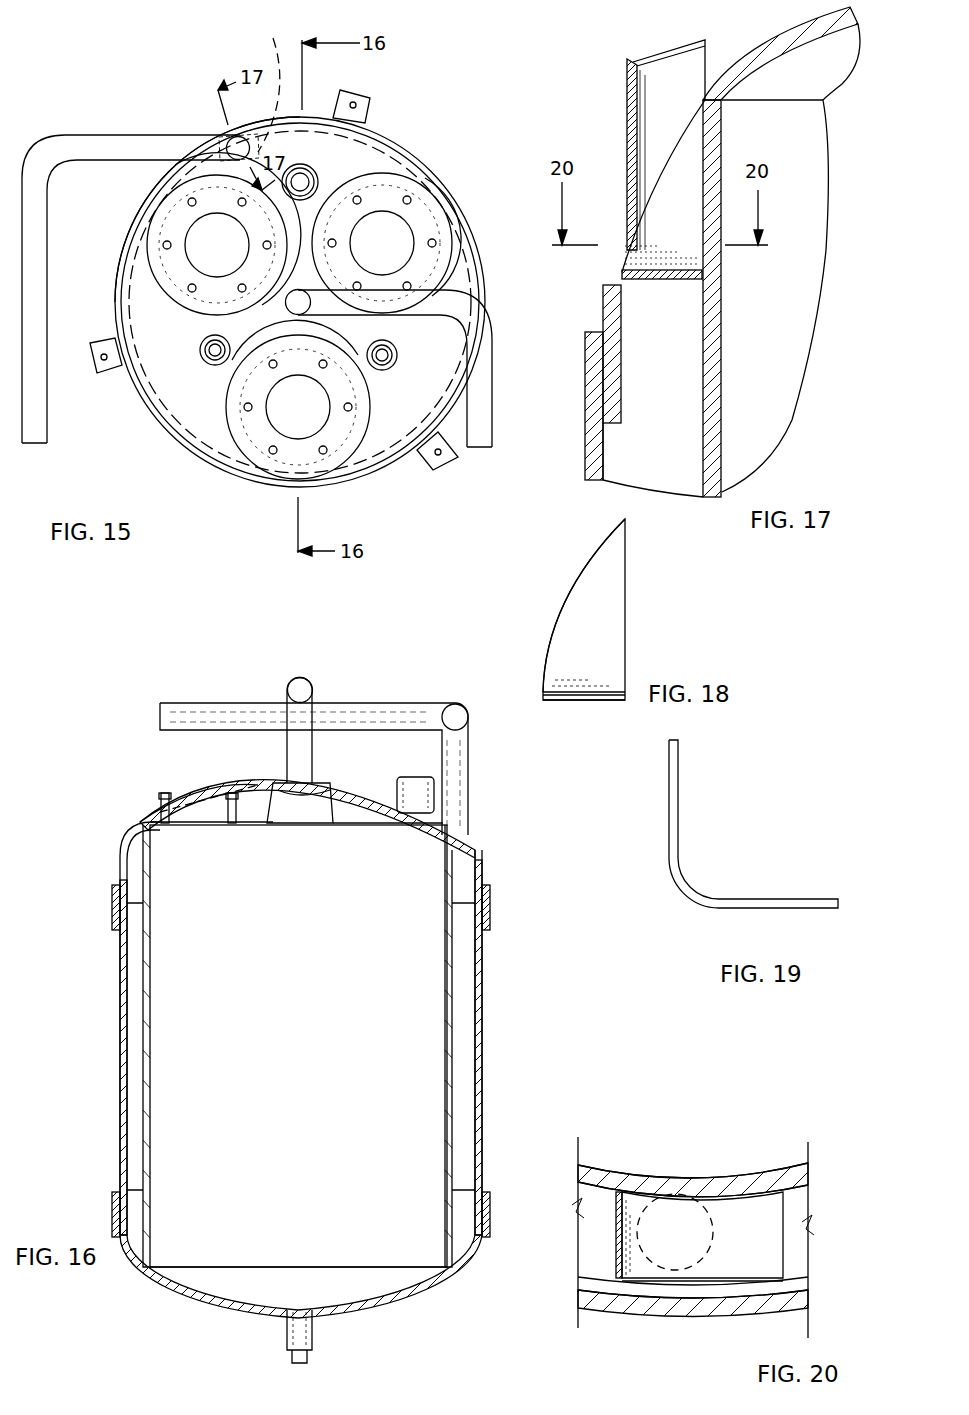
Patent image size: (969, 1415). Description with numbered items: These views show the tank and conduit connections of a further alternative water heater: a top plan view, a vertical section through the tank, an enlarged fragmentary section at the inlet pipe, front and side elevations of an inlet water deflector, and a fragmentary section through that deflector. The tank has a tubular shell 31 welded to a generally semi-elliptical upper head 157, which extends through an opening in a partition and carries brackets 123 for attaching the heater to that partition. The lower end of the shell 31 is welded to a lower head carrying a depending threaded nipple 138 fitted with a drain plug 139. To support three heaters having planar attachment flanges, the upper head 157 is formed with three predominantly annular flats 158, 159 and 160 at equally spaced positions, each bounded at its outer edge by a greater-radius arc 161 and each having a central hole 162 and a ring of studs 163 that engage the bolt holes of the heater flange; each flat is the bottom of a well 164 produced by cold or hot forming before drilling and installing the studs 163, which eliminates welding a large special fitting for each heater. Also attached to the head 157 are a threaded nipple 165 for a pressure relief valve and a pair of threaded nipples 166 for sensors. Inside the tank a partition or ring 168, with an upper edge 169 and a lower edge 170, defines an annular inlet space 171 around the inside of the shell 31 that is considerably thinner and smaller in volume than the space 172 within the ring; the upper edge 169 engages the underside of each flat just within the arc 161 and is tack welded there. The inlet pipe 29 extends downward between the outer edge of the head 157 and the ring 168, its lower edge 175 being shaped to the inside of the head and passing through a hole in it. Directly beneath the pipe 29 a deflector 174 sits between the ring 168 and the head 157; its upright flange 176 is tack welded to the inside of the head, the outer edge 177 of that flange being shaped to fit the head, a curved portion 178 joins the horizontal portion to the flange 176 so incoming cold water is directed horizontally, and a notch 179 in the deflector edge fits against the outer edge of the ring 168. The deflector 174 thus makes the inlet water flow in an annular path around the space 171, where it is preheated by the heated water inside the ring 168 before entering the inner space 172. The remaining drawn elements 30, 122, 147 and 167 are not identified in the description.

In FIG. 15, the inlet pipe 29 is at (114, 135).
In FIG. 17, the inlet pipe 29 is at (627, 98).
In FIG. 20, the inlet pipe 29 is at (700, 1227).
In FIG. 16, the inlet pipe 29 is at (405, 706).
In FIG. 15, the outlet pipe 30 is at (494, 372).
In FIG. 16, the outlet pipe 30 is at (296, 684).
In FIG. 15, the tubular shell 31 is at (388, 132).
In FIG. 17, the tubular shell 31 is at (585, 462).
In FIG. 20, the tubular shell 31 is at (633, 1312).
In FIG. 16, the tubular shell 31 is at (120, 978).
In FIG. 16, the bottom dish of shell 122 is at (380, 1312).
In FIG. 15, the brackets 123 is at (370, 96).
In FIG. 16, the threaded nipple 138 is at (285, 1338).
In FIG. 16, the drain plug 139 is at (300, 1363).
In FIG. 16, the flange 147 is at (112, 884).
In FIG. 15, the upper head 157 is at (197, 430).
In FIG. 17, the upper head 157 is at (770, 40).
In FIG. 20, the upper head 157 is at (800, 1290).
In FIG. 16, the upper head 157 is at (304, 780).
In FIG. 15, the annular flat 158 is at (172, 262).
In FIG. 15, the annular flat 159 is at (430, 180).
In FIG. 15, the annular flat 160 is at (345, 436).
In FIG. 16, the annular flat 160 is at (253, 828).
In FIG. 15, the arc 161 is at (162, 232).
In FIG. 16, the arc 161 is at (140, 822).
In FIG. 15, the central hole 162 is at (299, 325).
In FIG. 16, the central hole 162 is at (193, 828).
In FIG. 15, the studs 163 is at (238, 204).
In FIG. 16, the studs 163 is at (232, 795).
In FIG. 15, the well 164 is at (384, 198).
In FIG. 16, the well 164 is at (333, 810).
In FIG. 15, the threaded nipple 165 is at (302, 164).
In FIG. 16, the threaded nipple 165 is at (401, 776).
In FIG. 15, the threaded nipples 166 is at (206, 360).
In FIG. 17, the inner wall 167 is at (712, 362).
In FIG. 15, the partition ring 168 is at (178, 385).
In FIG. 17, the partition ring 168 is at (765, 100).
In FIG. 20, the partition ring 168 is at (633, 1172).
In FIG. 16, the partition ring 168 is at (150, 982).
In FIG. 16, the upper edge 169 is at (398, 828).
In FIG. 16, the lower edge 170 is at (292, 1265).
In FIG. 20, the annular inlet space 171 is at (796, 1205).
In FIG. 16, the annular inlet space 171 is at (462, 972).
In FIG. 16, the inner space 172 is at (298, 1046).
In FIG. 15, the deflector 174 is at (275, 48).
In FIG. 17, the deflector 174 is at (700, 312).
In FIG. 18, the deflector 174 is at (600, 690).
In FIG. 19, the deflector 174 is at (797, 898).
In FIG. 20, the deflector 174 is at (770, 1220).
In FIG. 16, the deflector 174 is at (470, 843).
In FIG. 17, the lower edge 175 is at (690, 130).
In FIG. 17, the upright flange 176 is at (680, 165).
In FIG. 18, the upright flange 176 is at (610, 592).
In FIG. 19, the upright flange 176 is at (680, 778).
In FIG. 20, the upright flange 176 is at (595, 1235).
In FIG. 18, the outer edge 177 is at (583, 575).
In FIG. 19, the curved portion 178 is at (694, 885).
In FIG. 20, the notch 179 is at (714, 1196).